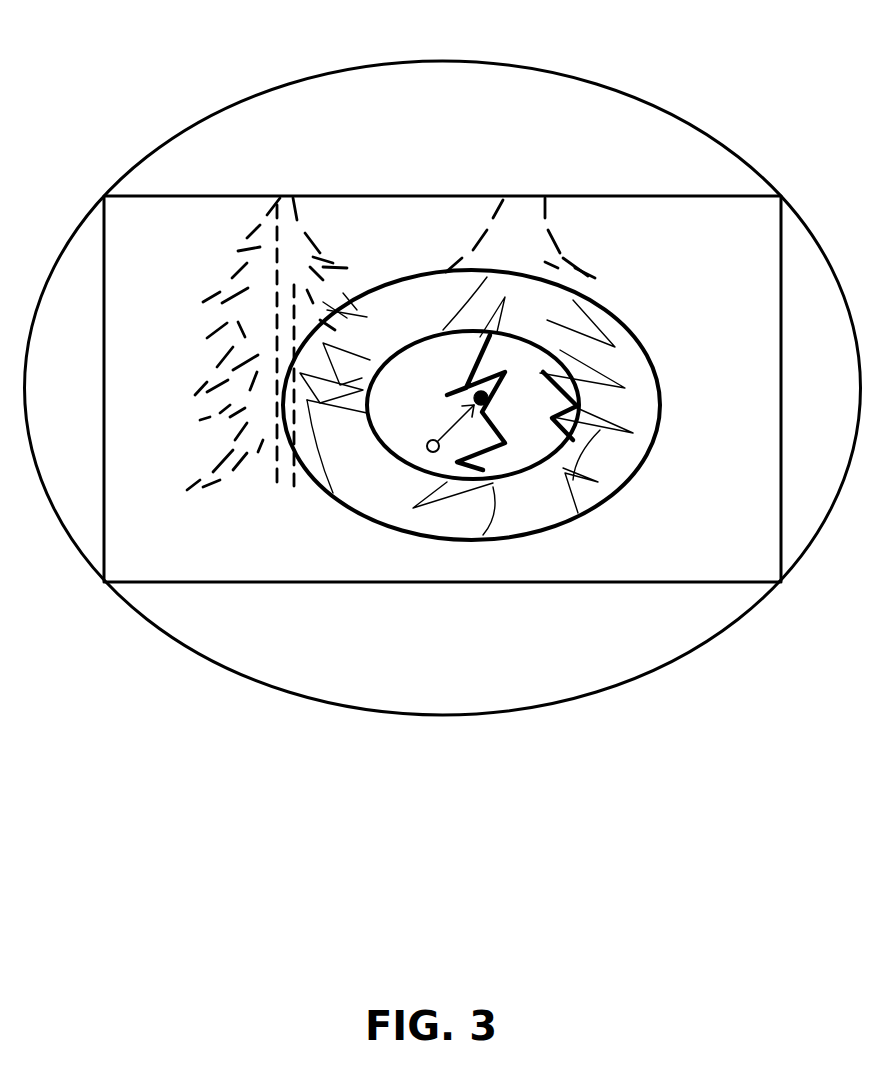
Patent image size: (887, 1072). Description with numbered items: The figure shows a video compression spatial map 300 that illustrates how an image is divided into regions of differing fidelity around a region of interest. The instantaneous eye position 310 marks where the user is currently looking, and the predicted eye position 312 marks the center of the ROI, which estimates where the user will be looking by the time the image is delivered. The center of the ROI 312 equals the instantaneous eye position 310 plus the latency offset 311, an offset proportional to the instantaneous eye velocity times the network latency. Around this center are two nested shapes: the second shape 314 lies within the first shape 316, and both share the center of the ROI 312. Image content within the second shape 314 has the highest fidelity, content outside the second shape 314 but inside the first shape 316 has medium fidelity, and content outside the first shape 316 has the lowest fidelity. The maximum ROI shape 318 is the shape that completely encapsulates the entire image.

The video compression spatial map 300 is at (463, 195).
The maximum ROI shape 318 is at (265, 85).
The first shape of the ROI 316 is at (400, 278).
The second shape of the ROI 314 is at (440, 333).
The predicted eye position 312 is at (445, 397).
The instantaneous eye position 310 is at (427, 446).
The latency offset 311 is at (492, 412).